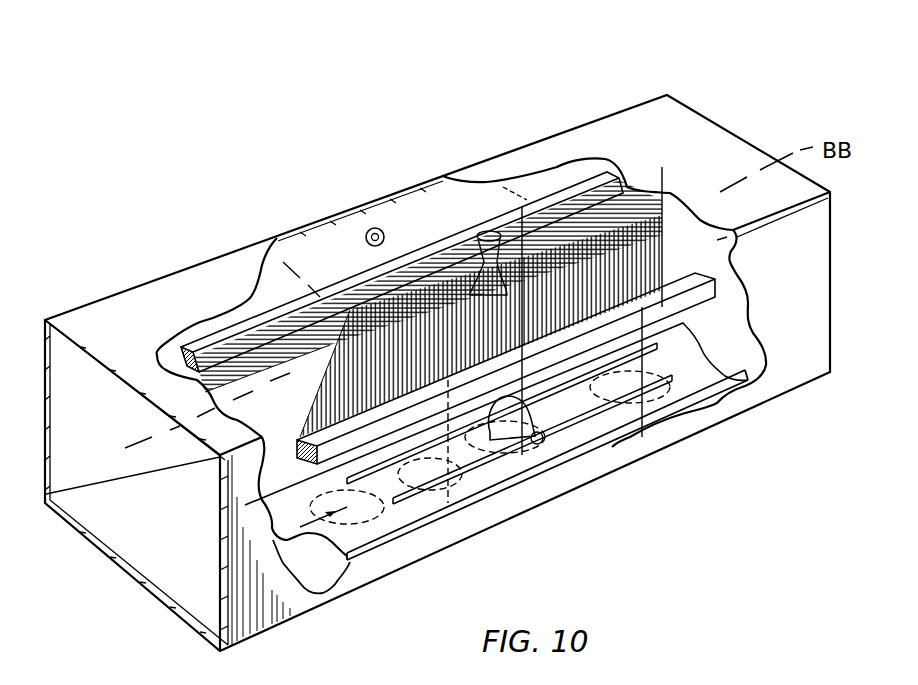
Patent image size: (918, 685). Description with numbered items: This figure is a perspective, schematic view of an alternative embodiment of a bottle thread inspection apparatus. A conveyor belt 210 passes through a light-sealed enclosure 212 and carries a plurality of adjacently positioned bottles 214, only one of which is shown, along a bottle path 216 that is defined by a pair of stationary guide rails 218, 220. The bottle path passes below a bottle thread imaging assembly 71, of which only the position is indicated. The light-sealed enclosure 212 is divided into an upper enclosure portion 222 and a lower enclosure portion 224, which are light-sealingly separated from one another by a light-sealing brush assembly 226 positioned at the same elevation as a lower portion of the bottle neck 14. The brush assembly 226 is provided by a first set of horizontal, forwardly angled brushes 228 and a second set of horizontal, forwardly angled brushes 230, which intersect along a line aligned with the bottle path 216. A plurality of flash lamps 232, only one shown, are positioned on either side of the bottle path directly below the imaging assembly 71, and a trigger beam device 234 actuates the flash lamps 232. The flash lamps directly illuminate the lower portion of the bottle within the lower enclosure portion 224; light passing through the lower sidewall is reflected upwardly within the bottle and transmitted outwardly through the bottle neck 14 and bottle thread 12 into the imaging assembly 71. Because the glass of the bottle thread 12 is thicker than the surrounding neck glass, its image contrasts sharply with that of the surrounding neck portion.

The bottle thread 12 is at (468, 250).
The bottle neck 14 is at (505, 233).
The bottle thread imaging assembly 71 is at (487, 158).
The conveyor belt 210 is at (390, 556).
The light-sealed enclosure 212 is at (567, 130).
The bottles 214 is at (520, 455).
The bottle path 216 is at (320, 533).
The stationary guide rail 218 is at (447, 484).
The stationary guide rail 220 is at (453, 484).
The upper enclosure portion 222 is at (273, 275).
The lower enclosure portion 224 is at (270, 405).
The light-sealing brush assembly 226 is at (413, 270).
The first set of horizontal, forwardly angled brushes 228 is at (520, 207).
The second set of horizontal, forwardly angled brushes 230 is at (655, 262).
The flash lamps 232 is at (543, 440).
The trigger beam device 234 is at (375, 228).